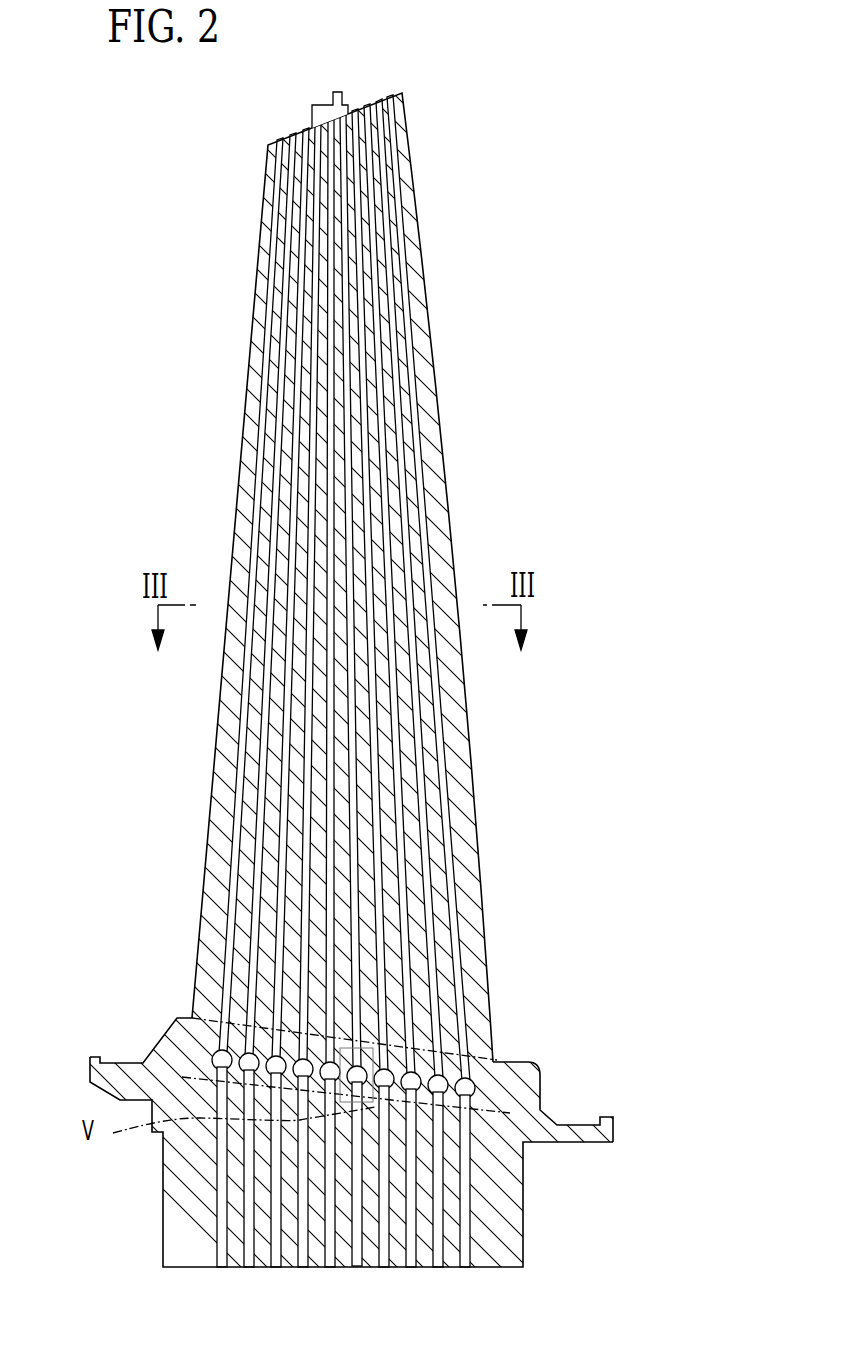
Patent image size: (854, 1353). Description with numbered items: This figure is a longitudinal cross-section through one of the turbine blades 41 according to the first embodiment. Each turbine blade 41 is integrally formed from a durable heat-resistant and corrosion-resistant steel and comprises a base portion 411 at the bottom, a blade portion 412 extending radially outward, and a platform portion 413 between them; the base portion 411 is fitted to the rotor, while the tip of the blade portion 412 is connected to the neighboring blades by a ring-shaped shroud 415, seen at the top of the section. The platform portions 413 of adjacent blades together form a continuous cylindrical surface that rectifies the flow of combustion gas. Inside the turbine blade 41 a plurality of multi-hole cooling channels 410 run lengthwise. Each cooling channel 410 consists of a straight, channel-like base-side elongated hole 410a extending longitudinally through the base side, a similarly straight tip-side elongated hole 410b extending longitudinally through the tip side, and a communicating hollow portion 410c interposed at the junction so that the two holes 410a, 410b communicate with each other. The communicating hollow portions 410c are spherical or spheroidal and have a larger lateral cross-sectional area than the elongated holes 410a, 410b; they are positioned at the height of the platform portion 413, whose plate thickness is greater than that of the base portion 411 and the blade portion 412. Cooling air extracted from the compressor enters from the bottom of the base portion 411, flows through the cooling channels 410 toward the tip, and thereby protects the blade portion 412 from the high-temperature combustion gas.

The turbine blade 41 is at (402, 676).
The cooling channel 410 is at (484, 681).
The base-side elongated hole 410a is at (452, 1167).
The tip-side elongated hole 410b is at (452, 890).
The communicating hollow portion 410c is at (468, 1090).
The base portion 411 is at (163, 1182).
The blade portion 412 is at (237, 510).
The platform portion 413 is at (175, 1028).
The shroud 415 is at (320, 105).